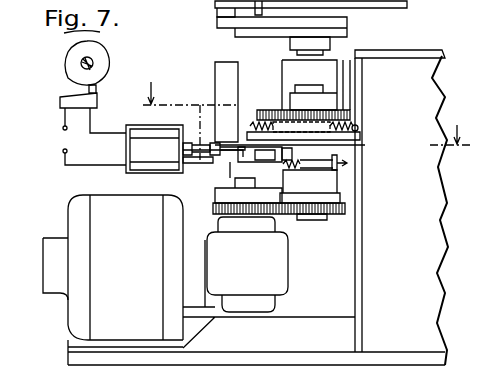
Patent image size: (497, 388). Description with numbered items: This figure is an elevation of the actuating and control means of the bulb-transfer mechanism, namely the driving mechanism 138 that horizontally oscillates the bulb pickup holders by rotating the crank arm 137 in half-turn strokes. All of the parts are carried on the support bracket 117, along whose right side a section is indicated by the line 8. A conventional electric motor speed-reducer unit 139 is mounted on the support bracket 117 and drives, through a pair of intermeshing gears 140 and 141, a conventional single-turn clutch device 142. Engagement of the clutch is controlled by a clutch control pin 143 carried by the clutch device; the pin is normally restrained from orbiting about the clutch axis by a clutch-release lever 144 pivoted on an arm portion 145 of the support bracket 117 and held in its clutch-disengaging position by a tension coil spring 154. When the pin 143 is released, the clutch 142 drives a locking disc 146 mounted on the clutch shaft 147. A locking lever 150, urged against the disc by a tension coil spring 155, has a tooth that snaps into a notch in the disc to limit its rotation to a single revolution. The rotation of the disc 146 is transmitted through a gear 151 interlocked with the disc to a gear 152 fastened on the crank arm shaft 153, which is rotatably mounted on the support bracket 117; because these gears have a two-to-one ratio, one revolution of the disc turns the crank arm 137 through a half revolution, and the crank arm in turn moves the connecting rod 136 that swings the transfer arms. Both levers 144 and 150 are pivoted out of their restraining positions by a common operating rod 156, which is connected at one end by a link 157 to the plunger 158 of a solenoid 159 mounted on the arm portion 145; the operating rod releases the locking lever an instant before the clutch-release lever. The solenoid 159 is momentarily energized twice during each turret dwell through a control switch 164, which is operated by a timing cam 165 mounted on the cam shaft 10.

The cam shaft 10 is at (82, 65).
The timing cam 165 is at (100, 52).
The control switch 164 is at (97, 100).
The solenoid 159 is at (134, 145).
The plunger 158 is at (186, 143).
The link 157 is at (213, 143).
The section line 8- 8 is at (306, 104).
The driving mechanism 138 is at (191, 99).
The locking lever 150 is at (245, 110).
The crank arm 137 is at (222, 28).
The connecting rod 136 is at (397, 10).
The crank arm shaft 153 is at (330, 43).
The gear 152 is at (262, 110).
The clutch-release lever 144 is at (272, 110).
The gear 151 is at (305, 110).
The tension coil spring 155 is at (362, 127).
The locking disc 146 is at (350, 145).
The clutch control pin 143 is at (340, 162).
The tension coil spring 154 is at (350, 173).
The single-turn clutch device 142 is at (355, 191).
The gear 141 is at (345, 208).
The arm portion 145 is at (201, 160).
The operating rod 156 is at (232, 172).
The clutch shaft 147 is at (317, 220).
The gear 140 is at (183, 222).
The electric motor speed-reducer unit 139 is at (121, 203).
The support bracket 117 is at (405, 287).